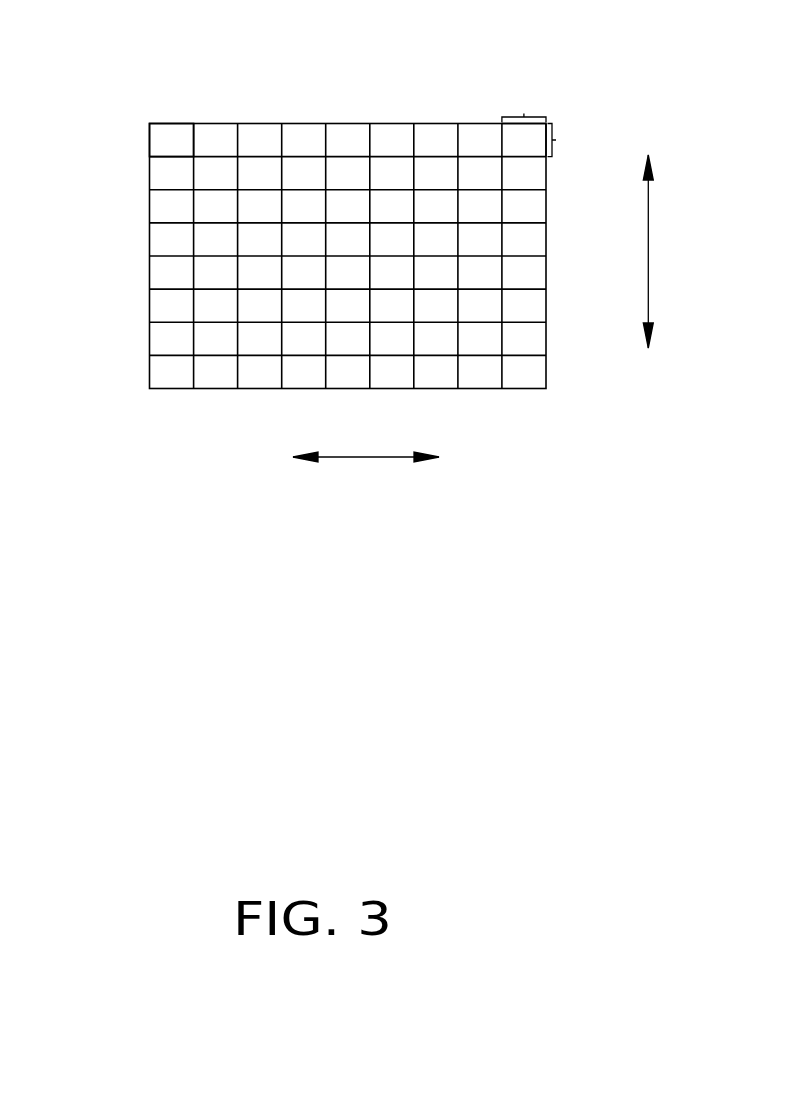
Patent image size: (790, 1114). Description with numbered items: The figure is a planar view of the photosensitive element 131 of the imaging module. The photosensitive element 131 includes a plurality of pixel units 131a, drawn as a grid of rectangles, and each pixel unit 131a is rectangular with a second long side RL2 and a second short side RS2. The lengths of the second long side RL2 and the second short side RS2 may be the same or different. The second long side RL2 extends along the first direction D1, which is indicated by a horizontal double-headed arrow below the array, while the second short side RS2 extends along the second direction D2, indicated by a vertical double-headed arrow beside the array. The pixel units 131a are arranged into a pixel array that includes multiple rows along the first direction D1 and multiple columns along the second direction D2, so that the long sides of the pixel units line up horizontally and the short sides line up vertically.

The photosensitive element 131 is at (370, 49).
The pixel unit 131a is at (160, 142).
The second long side RL2 is at (524, 101).
The second short side RS2 is at (572, 145).
The first direction D1 is at (366, 440).
The second direction D2 is at (664, 251).